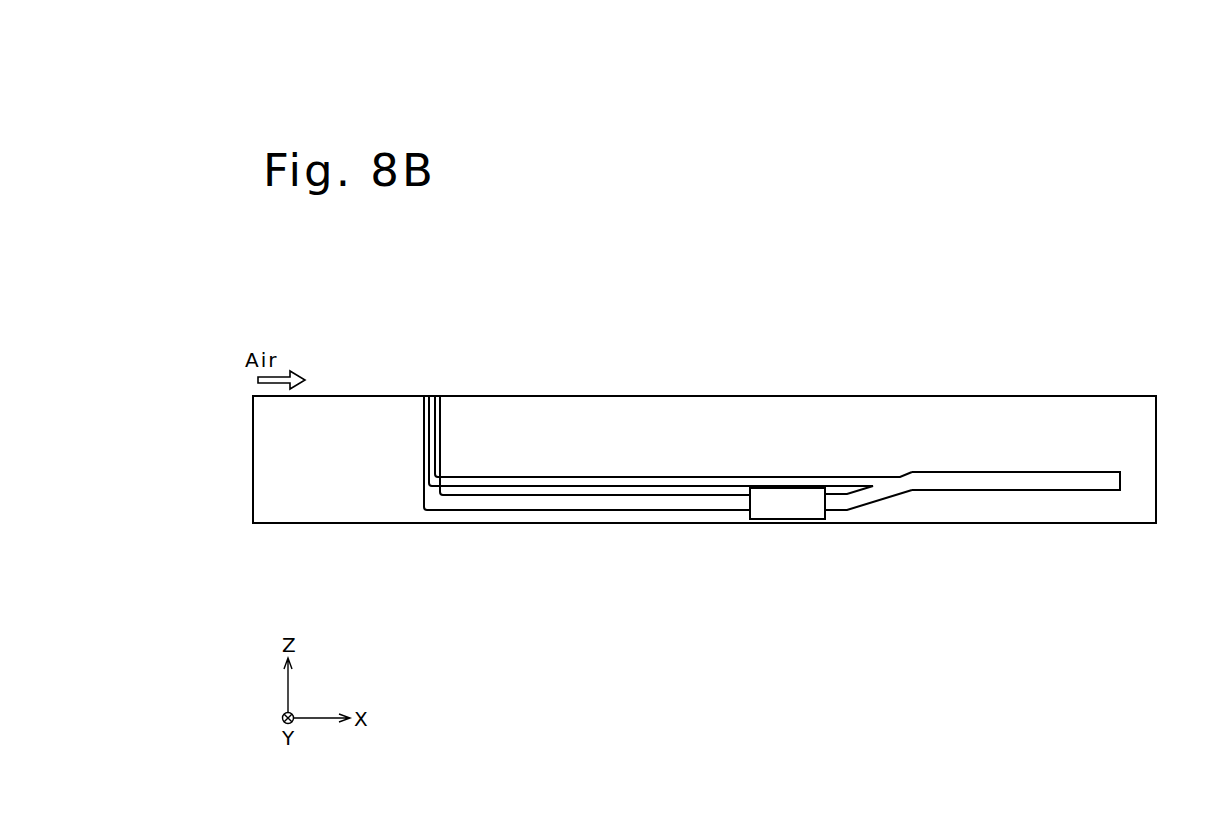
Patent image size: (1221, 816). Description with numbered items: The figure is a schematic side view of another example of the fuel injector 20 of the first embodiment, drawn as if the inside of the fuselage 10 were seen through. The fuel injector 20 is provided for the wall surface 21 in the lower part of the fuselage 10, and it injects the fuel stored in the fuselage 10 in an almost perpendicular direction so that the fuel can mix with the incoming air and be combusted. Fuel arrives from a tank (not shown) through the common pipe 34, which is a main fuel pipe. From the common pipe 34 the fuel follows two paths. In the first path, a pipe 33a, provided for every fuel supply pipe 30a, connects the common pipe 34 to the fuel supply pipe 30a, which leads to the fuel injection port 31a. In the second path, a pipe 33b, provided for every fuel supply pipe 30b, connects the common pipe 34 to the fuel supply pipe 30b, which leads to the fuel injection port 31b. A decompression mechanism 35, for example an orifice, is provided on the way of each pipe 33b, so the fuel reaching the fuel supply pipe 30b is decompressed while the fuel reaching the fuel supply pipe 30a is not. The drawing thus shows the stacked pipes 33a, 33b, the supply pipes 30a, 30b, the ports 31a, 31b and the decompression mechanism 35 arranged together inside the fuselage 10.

The fuselage 10 is at (903, 405).
The fuel injector 20 is at (543, 330).
The wall surface 21 is at (968, 395).
The fuel supply pipe 30a is at (445, 395).
The fuel supply pipe 30b is at (426, 450).
The fuel injection port 31a is at (433, 395).
The fuel injection port 31b is at (427, 397).
The pipe 33a is at (507, 482).
The pipe 33b is at (498, 508).
The common pipe 34 is at (1032, 471).
The decompression mechanism 35 is at (792, 514).